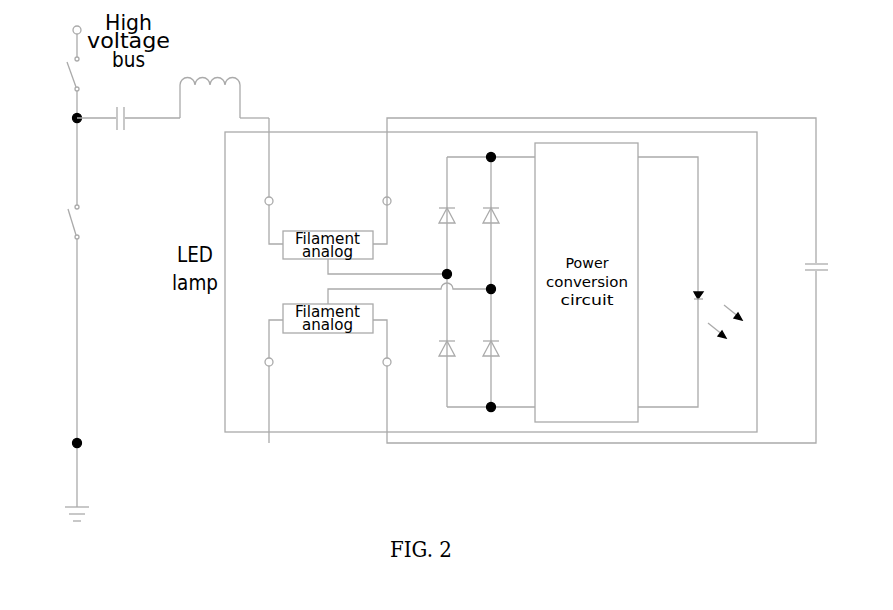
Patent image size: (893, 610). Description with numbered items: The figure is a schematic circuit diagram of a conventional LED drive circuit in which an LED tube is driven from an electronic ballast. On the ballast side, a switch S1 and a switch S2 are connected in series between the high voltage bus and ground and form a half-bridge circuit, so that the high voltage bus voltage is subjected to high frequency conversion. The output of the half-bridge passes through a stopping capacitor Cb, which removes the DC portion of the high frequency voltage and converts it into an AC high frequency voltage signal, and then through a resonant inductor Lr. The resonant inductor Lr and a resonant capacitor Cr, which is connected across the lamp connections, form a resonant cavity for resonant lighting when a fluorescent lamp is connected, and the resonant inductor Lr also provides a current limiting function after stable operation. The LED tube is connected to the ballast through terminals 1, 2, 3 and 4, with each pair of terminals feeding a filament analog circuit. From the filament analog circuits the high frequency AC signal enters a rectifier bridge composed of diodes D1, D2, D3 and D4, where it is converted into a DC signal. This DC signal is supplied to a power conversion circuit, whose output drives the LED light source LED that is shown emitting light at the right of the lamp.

The switch S1 is at (57, 74).
The switch S2 is at (57, 222).
The stopping capacitor Cb is at (116, 107).
The resonant inductor Lr is at (210, 79).
The resonant capacitor Cr is at (831, 256).
The terminal 1 is at (278, 202).
The terminal 2 is at (377, 202).
The terminal 3 is at (278, 364).
The terminal 4 is at (377, 364).
The diode D1 is at (436, 204).
The diode D2 is at (501, 204).
The diode D3 is at (436, 363).
The diode D4 is at (500, 363).
The LED light source LED is at (691, 282).